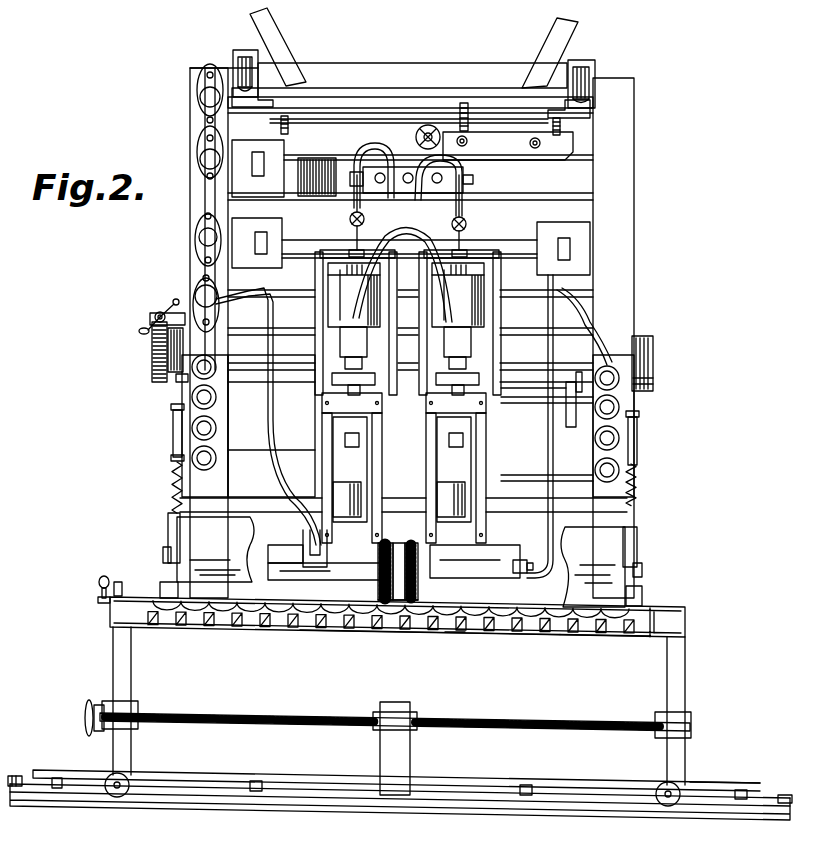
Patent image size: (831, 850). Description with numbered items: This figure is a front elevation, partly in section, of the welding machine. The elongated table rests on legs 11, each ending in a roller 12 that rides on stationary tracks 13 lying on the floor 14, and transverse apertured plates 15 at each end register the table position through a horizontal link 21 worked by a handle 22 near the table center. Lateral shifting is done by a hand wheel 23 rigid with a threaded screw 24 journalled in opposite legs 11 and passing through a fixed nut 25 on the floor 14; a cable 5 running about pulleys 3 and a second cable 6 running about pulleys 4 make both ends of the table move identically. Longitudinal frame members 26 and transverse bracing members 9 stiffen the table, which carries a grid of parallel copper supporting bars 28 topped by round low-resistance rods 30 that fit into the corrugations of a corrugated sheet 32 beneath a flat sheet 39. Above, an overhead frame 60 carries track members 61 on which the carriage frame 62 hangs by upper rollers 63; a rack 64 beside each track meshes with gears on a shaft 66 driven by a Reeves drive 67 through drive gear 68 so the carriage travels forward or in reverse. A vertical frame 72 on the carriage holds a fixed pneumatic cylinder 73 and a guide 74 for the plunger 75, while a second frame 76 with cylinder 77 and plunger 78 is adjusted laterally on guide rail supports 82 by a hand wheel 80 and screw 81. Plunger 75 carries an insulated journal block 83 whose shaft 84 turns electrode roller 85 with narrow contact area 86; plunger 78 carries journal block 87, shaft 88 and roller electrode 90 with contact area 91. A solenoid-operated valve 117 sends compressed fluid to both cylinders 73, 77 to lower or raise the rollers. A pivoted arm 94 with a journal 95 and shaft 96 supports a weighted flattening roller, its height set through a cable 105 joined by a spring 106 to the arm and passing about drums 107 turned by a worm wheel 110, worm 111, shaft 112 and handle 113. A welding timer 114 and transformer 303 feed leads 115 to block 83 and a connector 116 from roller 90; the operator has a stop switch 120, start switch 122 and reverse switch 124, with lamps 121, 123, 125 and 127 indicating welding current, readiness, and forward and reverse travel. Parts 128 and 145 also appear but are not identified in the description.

The pulleys 3 is at (785, 795).
The pulleys 4 is at (18, 774).
The cable 5 is at (715, 796).
The second cable 6 is at (82, 780).
The transverse bracing and frame members 9 is at (290, 627).
The supports or legs 11 is at (131, 664).
The roller 12 is at (128, 795).
The stationary tracks 13 is at (324, 800).
The floor 14 is at (76, 806).
The transverse apertured plates 15 is at (198, 775).
The horizontal link 21 is at (98, 601).
The handle 22 is at (98, 583).
The hand wheel 23 is at (86, 718).
The threaded shaft or screw 24 is at (262, 706).
The fixed nut 25 is at (390, 712).
The longitudinal frame members 26 is at (686, 621).
The supporting plates or bars 28 is at (245, 625).
The round low-resistance rods 30 is at (604, 636).
The corrugated sheet 32 is at (519, 630).
The flat sheet 39 is at (166, 599).
The overhead frame 60 is at (276, 48).
The track members 61 is at (233, 72).
The rectangular open frame 62 is at (620, 230).
The upper supporting rollers 63 is at (244, 52).
The rack 64 is at (273, 94).
The shaft 66 is at (403, 287).
The Reeves drive 67 is at (481, 151).
The drive gear 68 is at (461, 110).
The vertical frame 72 is at (314, 332).
The fixed pneumatic cylinder 73 is at (338, 305).
The vertical guide 74 is at (322, 430).
The plunger 75 is at (343, 497).
The second vertical frame 76 is at (501, 272).
The cylinder 77 is at (465, 260).
The plunger 78 is at (466, 508).
The hand wheel 80 is at (577, 380).
The screw 81 is at (541, 377).
The guide rail supports 82 is at (525, 326).
The roller electrode journal block 83 is at (324, 561).
The shaft 84 is at (301, 556).
The electrode roller 85 is at (380, 600).
The narrow peripheral contact area 86 is at (395, 551).
The journal block 87 is at (452, 558).
The shaft 88 is at (505, 574).
The roller electrode 90 is at (387, 542).
The narrow peripheral contact area 91 is at (454, 608).
The arm 94 is at (401, 562).
The journal 95 is at (170, 530).
The shaft 96 is at (167, 552).
The cable 105 is at (639, 408).
The spring 106 is at (172, 478).
The drums 107 is at (156, 368).
The worm wheel 110 is at (152, 351).
The worm 111 is at (156, 315).
The shaft 112 is at (140, 330).
The handle 113 is at (172, 306).
The welding timer 114 is at (283, 228).
The leads 115 is at (271, 426).
The connector 116 is at (545, 423).
The solenoid-operated valve 117 is at (408, 194).
The stop switch 120 is at (178, 457).
The lamp 121 is at (200, 295).
The start switch 122 is at (172, 431).
The lamp 123 is at (200, 236).
The reverse switch 124 is at (176, 409).
The lamp 125 is at (200, 155).
The lamp 127 is at (200, 107).
The switch panel 128 is at (182, 378).
The bolt 145 is at (289, 122).
The welding transformer 303 is at (243, 259).